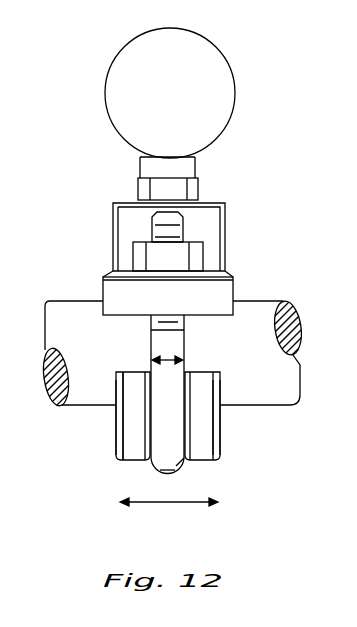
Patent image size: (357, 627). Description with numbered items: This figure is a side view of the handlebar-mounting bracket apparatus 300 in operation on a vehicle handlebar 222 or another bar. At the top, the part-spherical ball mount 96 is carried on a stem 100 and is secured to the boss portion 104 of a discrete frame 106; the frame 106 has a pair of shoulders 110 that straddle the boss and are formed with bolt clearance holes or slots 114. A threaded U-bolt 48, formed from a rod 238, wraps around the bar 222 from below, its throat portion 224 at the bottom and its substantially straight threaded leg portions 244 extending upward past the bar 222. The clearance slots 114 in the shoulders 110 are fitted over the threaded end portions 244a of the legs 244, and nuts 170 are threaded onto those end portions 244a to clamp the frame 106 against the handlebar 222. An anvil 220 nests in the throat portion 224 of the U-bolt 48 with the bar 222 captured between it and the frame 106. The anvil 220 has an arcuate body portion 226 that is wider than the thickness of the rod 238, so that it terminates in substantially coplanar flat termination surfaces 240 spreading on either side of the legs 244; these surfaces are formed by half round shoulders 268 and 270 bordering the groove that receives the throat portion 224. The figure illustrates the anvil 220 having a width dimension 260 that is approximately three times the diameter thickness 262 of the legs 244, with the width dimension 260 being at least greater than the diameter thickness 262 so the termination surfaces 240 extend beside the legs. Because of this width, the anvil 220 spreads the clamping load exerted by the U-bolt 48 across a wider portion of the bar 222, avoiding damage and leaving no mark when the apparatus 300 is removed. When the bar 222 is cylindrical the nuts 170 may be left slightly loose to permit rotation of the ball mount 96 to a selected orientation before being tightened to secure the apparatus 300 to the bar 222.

The handlebar-mounting bracket apparatus 300 is at (283, 94).
The part-spherical ball mount 96 is at (222, 82).
The stem 100 is at (148, 163).
The threaded end portion 244a is at (150, 188).
The boss portion 104 is at (208, 212).
The bolt clearance hole or slot 114 is at (142, 243).
The nut 170 is at (152, 271).
The shoulder 110 is at (107, 273).
The frame 106 is at (112, 293).
The vehicle handlebar 222 is at (260, 310).
The leg portion 244 is at (155, 350).
The diameter thickness 262 is at (168, 357).
The termination surface 240 is at (132, 372).
The half round shoulder 268 is at (125, 412).
The body portion 226 is at (117, 437).
The U-bolt 48 is at (163, 465).
The rod 238 is at (177, 398).
The half round shoulder 270 is at (220, 433).
The anvil 220 is at (218, 458).
The throat portion 224 is at (183, 467).
The width dimension 260 is at (167, 503).